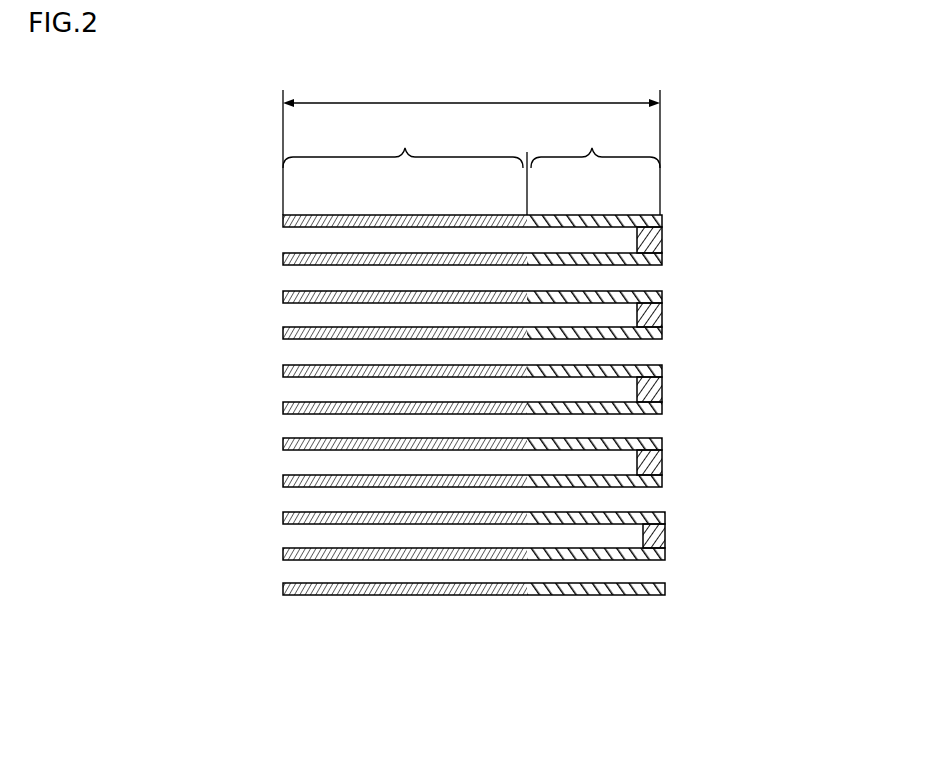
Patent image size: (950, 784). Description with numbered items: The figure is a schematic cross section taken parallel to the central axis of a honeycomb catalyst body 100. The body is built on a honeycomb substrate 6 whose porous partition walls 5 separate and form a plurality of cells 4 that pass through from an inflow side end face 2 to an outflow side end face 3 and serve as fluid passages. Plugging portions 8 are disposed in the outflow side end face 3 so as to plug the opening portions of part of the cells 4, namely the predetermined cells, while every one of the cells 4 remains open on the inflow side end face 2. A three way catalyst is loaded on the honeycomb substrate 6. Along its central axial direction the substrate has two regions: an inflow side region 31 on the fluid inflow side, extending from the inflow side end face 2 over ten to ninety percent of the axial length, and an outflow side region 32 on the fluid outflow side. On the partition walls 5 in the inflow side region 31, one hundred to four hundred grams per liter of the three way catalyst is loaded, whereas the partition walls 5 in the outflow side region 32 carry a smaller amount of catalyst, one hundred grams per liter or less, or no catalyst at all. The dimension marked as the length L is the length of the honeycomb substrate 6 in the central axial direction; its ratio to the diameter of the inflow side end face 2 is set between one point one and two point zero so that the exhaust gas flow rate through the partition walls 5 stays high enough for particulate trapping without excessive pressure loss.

The honeycomb catalyst body 100 is at (727, 75).
The length in the central axial direction L is at (471, 85).
The inflow side end face 2 is at (283, 368).
The outflow side end face 3 is at (662, 335).
The inflow side region 31 is at (403, 143).
The outflow side region 32 is at (593, 166).
The cells 4 is at (450, 528).
The partition walls 5 is at (372, 595).
The honeycomb substrate 6 is at (318, 598).
The plugging portions 8 is at (662, 242).